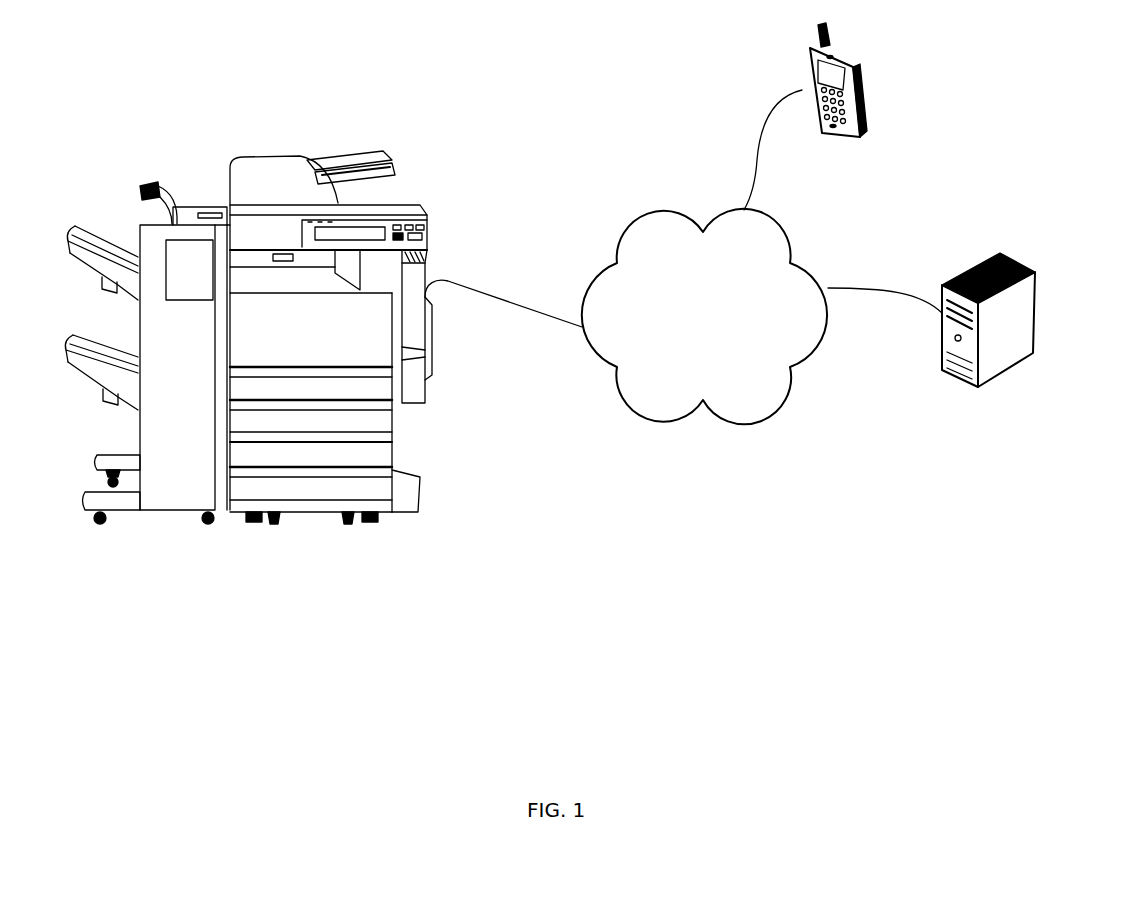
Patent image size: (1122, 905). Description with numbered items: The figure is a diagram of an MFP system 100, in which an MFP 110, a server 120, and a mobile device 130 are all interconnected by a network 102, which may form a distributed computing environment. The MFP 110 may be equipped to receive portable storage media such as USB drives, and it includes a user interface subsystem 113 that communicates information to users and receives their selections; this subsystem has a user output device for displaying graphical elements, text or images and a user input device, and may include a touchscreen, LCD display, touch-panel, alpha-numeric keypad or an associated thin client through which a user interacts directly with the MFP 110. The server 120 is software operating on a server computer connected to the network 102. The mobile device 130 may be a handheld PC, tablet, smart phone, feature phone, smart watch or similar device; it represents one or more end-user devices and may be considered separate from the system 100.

The MFP system 100 is at (636, 88).
The network 102 is at (704, 317).
The MFP 110 is at (333, 158).
The user interface subsystem 113 is at (372, 233).
The server 120 is at (1035, 278).
The mobile device 130 is at (865, 88).